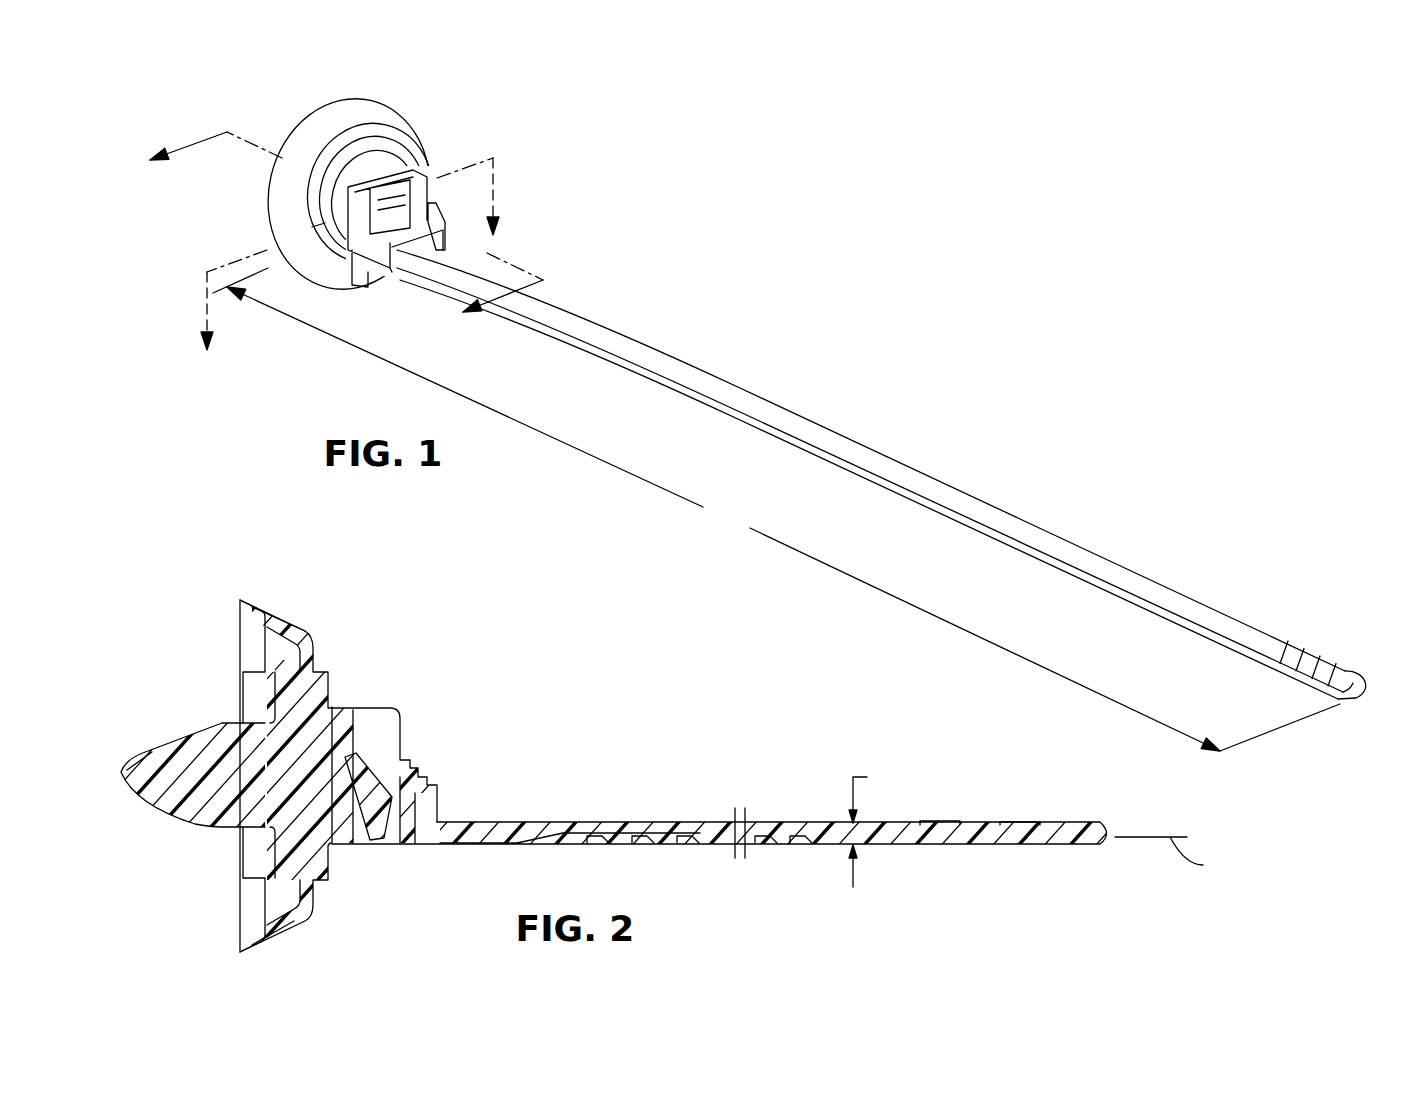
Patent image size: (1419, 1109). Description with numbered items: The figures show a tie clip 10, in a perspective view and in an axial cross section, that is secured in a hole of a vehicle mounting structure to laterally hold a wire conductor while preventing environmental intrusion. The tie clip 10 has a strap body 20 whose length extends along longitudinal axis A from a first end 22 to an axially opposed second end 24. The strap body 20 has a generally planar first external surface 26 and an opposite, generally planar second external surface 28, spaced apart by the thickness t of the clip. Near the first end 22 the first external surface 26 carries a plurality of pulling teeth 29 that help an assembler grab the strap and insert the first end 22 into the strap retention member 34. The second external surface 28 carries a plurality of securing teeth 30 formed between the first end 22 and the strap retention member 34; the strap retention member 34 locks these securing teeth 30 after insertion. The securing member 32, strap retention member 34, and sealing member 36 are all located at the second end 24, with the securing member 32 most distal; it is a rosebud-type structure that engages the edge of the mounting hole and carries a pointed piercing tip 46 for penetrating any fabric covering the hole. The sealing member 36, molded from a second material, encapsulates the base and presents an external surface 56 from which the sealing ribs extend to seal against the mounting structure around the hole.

In FIG. 1, the tie clip 10 is at (852, 318).
In FIG. 2, the tie clip 10 is at (507, 678).
In FIG. 1, the strap body 20 is at (883, 460).
In FIG. 2, the strap body 20 is at (760, 823).
In FIG. 1, the first end 22 is at (1305, 660).
In FIG. 1, the second end 24 is at (402, 112).
In FIG. 2, the second end 24 is at (308, 630).
In FIG. 2, the first external surface 26 is at (560, 822).
In FIG. 2, the second external surface 28 is at (468, 843).
In FIG. 2, the pulling teeth 29 is at (982, 825).
In FIG. 2, the securing teeth 30 is at (677, 840).
In FIG. 2, the securing member 32 is at (182, 733).
In FIG. 1, the strap retention member 34 is at (370, 244).
In FIG. 2, the sealing member 36 is at (252, 602).
In FIG. 2, the pointed piercing tip 46 is at (121, 771).
In FIG. 2, the external surface 56 is at (267, 897).